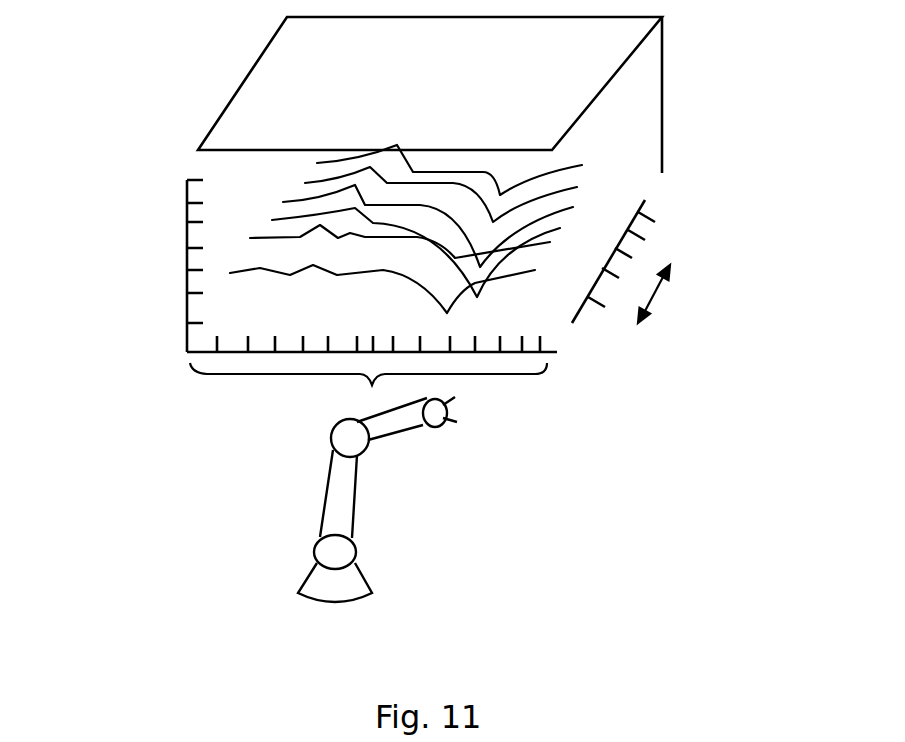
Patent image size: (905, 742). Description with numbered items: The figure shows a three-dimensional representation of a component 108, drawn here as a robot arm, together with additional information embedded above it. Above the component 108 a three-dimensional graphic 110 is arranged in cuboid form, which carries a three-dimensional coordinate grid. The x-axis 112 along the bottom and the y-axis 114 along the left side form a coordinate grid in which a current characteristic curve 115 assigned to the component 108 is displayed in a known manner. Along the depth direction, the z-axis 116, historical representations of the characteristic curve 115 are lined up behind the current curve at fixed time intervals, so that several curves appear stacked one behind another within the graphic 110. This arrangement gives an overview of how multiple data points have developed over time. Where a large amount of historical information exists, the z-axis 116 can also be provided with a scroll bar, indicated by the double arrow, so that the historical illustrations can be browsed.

The component 108 is at (357, 482).
The three-dimensional graphic 110 is at (187, 330).
The x-axis 112 is at (537, 352).
The y-axis 114 is at (187, 232).
The characteristic curve 115 is at (248, 268).
The z-axis 116 is at (628, 228).